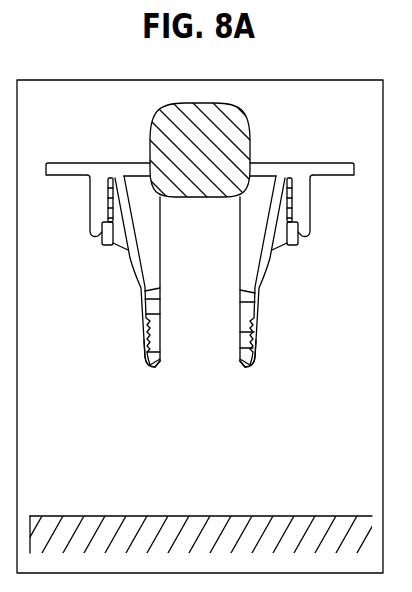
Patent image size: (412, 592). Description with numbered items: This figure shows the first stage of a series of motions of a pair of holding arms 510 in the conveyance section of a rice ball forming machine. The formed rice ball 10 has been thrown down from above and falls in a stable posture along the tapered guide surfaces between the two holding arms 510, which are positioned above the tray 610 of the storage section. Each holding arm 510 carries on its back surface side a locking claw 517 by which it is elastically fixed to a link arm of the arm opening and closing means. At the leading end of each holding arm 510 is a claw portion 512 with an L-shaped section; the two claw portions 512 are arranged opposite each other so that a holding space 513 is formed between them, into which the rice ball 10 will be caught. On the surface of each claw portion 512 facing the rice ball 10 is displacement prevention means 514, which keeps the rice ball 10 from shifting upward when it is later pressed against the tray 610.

The rice ball 10 is at (248, 132).
The locking claw 517 is at (88, 208).
The holding arm 510 is at (109, 311).
The claw portion 512 is at (126, 350).
The holding space 513 is at (211, 368).
The displacement prevention means 514 is at (148, 315).
The tray 610 is at (318, 516).